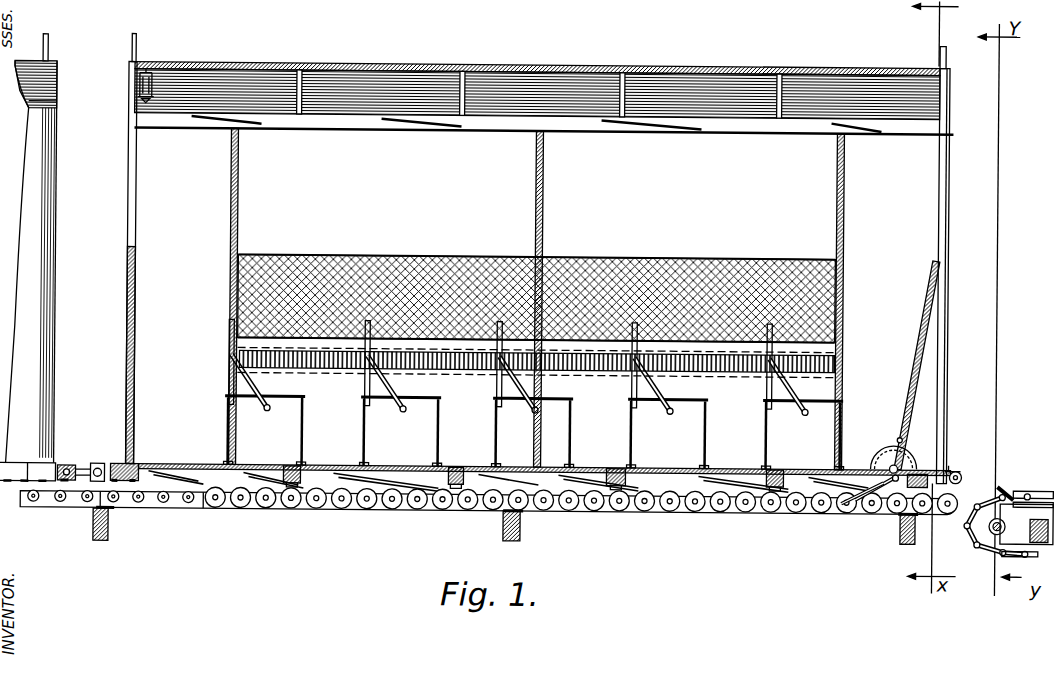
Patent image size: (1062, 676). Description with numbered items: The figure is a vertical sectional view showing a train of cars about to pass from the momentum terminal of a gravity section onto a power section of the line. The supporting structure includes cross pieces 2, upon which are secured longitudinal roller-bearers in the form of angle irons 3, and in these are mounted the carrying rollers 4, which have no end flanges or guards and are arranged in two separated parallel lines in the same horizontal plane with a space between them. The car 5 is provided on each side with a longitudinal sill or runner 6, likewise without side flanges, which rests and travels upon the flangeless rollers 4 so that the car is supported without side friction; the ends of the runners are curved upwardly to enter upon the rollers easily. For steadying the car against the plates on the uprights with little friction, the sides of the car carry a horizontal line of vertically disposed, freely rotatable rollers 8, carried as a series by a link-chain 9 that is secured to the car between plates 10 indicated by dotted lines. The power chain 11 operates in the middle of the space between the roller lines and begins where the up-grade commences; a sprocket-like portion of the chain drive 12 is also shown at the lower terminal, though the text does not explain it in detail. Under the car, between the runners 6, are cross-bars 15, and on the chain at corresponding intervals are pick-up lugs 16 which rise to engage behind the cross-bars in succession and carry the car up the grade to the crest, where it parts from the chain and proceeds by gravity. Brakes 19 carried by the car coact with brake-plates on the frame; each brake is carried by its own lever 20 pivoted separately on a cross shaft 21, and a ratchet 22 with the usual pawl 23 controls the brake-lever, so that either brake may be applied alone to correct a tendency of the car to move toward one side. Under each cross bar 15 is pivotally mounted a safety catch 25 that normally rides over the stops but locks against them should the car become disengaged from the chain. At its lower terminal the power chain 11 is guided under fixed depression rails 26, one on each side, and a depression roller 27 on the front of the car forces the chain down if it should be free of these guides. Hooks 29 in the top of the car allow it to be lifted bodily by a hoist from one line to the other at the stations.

The cross pieces 2 is at (95, 529).
The angle irons 3 is at (187, 511).
The carrying rollers 4 is at (160, 500).
The car 5 is at (37, 252).
The longitudinal sill or runner 6 is at (270, 492).
The rollers 8 is at (331, 375).
The link-chain 9 is at (723, 376).
The plates 10 is at (602, 394).
The power chain 11 is at (1006, 553).
The sprocket chain 12 is at (987, 519).
The cross-bars 15 is at (303, 480).
The pick-up lugs 16 is at (1006, 494).
The brakes 19 is at (884, 483).
The lever 20 is at (913, 377).
The cross shaft 21 is at (888, 476).
The ratchet 22 is at (891, 452).
The pawl 23 is at (900, 436).
The safety catch 25 is at (302, 489).
The depression rails 26 is at (1020, 486).
The depression roller 27 is at (960, 467).
The hooks 29 is at (46, 47).